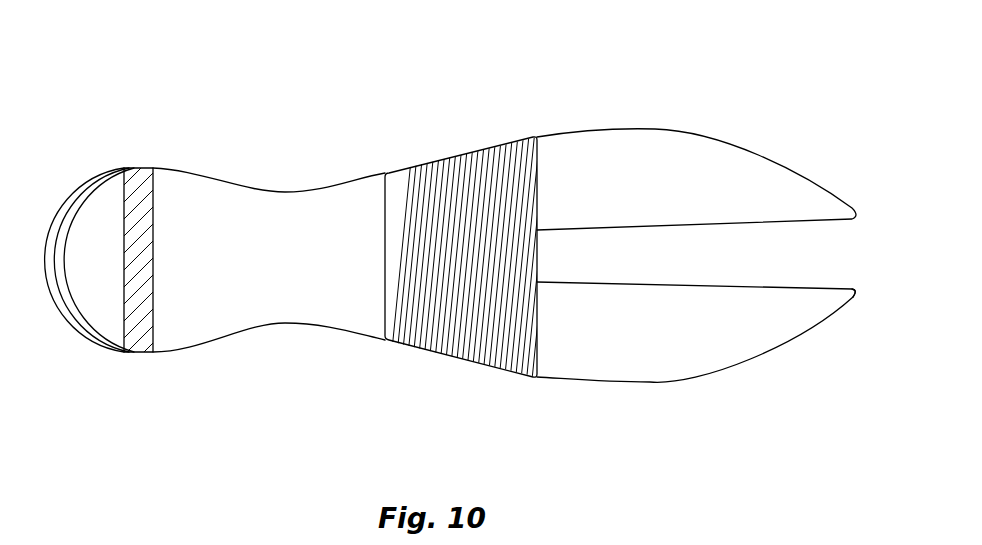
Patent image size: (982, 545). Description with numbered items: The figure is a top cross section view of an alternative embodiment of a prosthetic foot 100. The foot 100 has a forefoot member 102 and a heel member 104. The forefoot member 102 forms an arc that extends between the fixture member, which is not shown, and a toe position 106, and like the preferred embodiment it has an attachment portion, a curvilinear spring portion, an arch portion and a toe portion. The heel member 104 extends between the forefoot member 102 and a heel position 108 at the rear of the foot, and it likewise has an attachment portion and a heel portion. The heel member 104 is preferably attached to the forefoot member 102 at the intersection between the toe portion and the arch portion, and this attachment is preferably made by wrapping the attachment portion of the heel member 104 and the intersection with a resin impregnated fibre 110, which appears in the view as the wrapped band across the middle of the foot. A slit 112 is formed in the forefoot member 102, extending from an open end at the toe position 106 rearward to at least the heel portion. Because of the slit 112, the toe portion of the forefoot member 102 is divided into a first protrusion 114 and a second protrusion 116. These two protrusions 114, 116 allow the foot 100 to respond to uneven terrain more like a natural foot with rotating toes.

The prosthetic foot 100 is at (601, 91).
The forefoot member 102 is at (318, 312).
The heel member 104 is at (100, 320).
The toe position 106 is at (860, 297).
The heel position 108 is at (63, 200).
The resin impregnated fibre 110 is at (447, 327).
The slit 112 is at (767, 260).
The first protrusion 114 is at (723, 160).
The second protrusion 116 is at (675, 357).